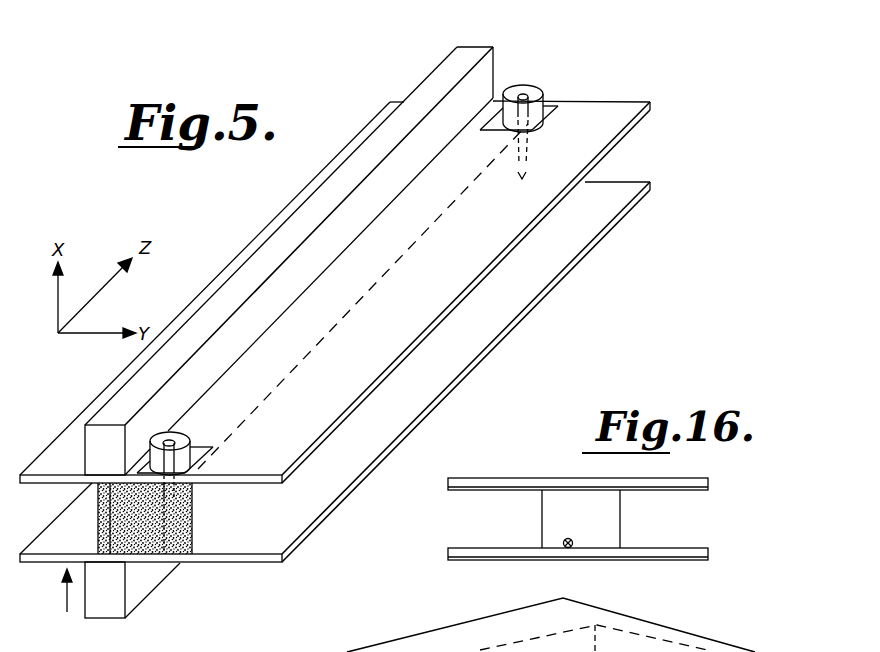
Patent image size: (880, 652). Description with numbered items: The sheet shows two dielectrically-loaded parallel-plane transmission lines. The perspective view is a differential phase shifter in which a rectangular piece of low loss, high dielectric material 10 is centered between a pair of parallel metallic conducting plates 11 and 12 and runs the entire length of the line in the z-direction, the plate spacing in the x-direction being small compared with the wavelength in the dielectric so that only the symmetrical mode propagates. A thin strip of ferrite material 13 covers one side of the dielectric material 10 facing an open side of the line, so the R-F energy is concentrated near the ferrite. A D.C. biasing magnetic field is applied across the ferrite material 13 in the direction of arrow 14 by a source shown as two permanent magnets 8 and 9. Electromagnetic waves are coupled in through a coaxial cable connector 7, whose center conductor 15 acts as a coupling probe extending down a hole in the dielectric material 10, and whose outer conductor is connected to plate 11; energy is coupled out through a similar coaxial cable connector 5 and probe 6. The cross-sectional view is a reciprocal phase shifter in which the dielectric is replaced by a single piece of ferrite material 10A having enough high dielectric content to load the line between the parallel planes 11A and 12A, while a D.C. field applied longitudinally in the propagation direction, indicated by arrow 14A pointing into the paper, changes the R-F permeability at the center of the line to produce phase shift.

In FIG. 5, the coaxial cable connector 5 is at (532, 92).
In FIG. 5, the probe 6 is at (517, 140).
In FIG. 5, the coaxial cable connector 7 is at (180, 438).
In FIG. 5, the permanent magnet 8 is at (133, 378).
In FIG. 5, the permanent magnet 9 is at (97, 618).
In FIG. 5, the high dielectric material 10 is at (180, 548).
In FIG. 5, the parallel conducting plate 11 is at (623, 136).
In FIG. 5, the parallel conducting plate 12 is at (417, 420).
In FIG. 5, the ferrite material 13 is at (98, 498).
In FIG. 5, the arrow 14 is at (67, 598).
In FIG. 5, the center conductor 15 is at (196, 503).
In FIG. 16, the parallel plane 11A is at (708, 482).
In FIG. 16, the parallel plane 12A is at (708, 553).
In FIG. 16, the ferrite material 10A is at (603, 535).
In FIG. 16, the arrow 14A is at (560, 547).